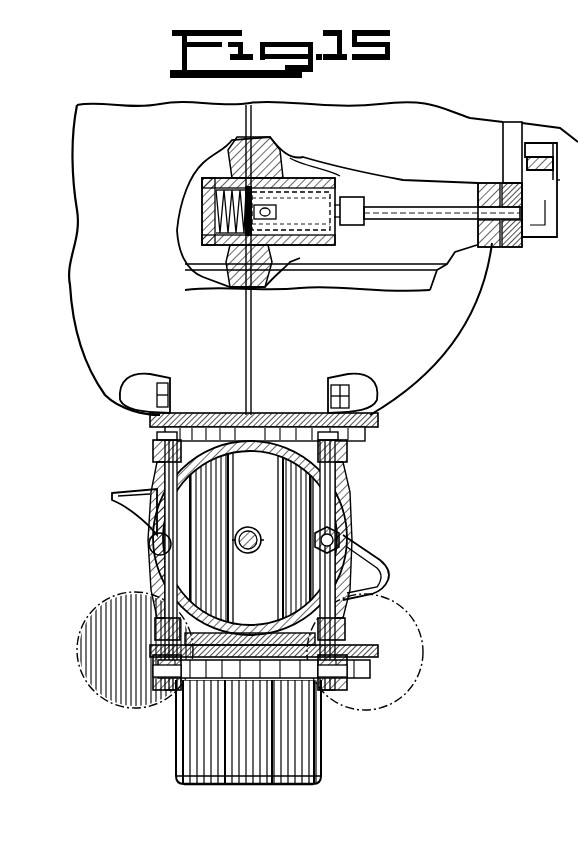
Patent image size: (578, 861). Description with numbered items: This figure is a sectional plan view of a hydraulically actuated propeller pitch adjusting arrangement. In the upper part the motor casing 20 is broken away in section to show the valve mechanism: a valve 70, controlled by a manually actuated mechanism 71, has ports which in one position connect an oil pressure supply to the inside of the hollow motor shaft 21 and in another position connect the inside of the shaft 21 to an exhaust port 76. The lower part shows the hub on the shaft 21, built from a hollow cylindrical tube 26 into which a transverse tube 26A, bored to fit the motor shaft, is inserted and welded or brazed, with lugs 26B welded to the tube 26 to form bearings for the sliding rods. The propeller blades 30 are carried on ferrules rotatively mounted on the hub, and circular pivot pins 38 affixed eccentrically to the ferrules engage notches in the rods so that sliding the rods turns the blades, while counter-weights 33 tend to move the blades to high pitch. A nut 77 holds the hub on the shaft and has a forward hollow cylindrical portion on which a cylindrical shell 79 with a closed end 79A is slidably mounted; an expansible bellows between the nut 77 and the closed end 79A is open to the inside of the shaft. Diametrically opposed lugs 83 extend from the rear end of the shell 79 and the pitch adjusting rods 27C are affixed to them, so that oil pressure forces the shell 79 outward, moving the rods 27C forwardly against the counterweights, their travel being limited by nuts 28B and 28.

The motor casing 20 is at (83, 209).
The hollow shaft 21 is at (238, 433).
The hollow cylindrical tube 26 is at (345, 508).
The tube 26A is at (259, 481).
The lugs 26B is at (158, 473).
The propeller pitch adjusting rods 27C is at (170, 556).
The nuts 28 is at (157, 624).
The nuts 28B is at (152, 452).
The propeller blades 30 is at (122, 506).
The counter-weights 33 is at (92, 656).
The circular pivot pins 38 is at (150, 547).
The valve 70 is at (330, 228).
The manually actuated mechanism 71 is at (540, 240).
The exhaust port 76 is at (275, 195).
The nut 77 is at (231, 655).
The cylindrical shell 79 is at (176, 745).
The closed end 79A is at (213, 787).
The lugs 83 is at (157, 667).